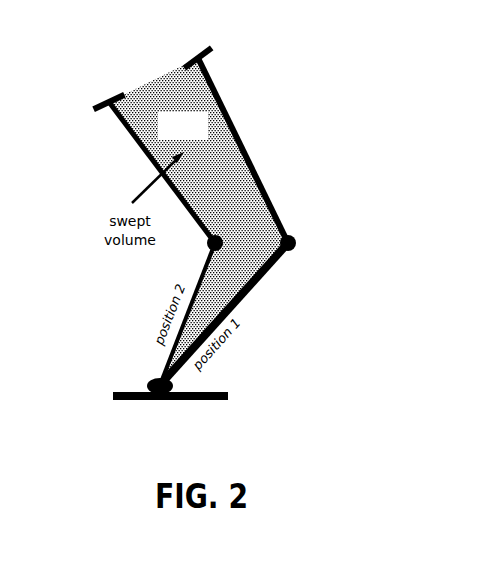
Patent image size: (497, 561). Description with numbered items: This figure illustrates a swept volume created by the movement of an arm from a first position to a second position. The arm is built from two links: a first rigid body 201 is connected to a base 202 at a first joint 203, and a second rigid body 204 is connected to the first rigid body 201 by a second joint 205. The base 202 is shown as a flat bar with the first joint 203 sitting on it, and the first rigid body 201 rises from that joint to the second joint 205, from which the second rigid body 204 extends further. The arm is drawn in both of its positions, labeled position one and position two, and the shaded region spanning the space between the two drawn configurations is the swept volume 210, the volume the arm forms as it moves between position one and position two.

The first rigid body 201 is at (257, 290).
The base 202 is at (127, 402).
The first joint 203 is at (142, 383).
The second rigid body 204 is at (250, 153).
The second joint 205 is at (293, 241).
The swept volume 210 is at (198, 221).